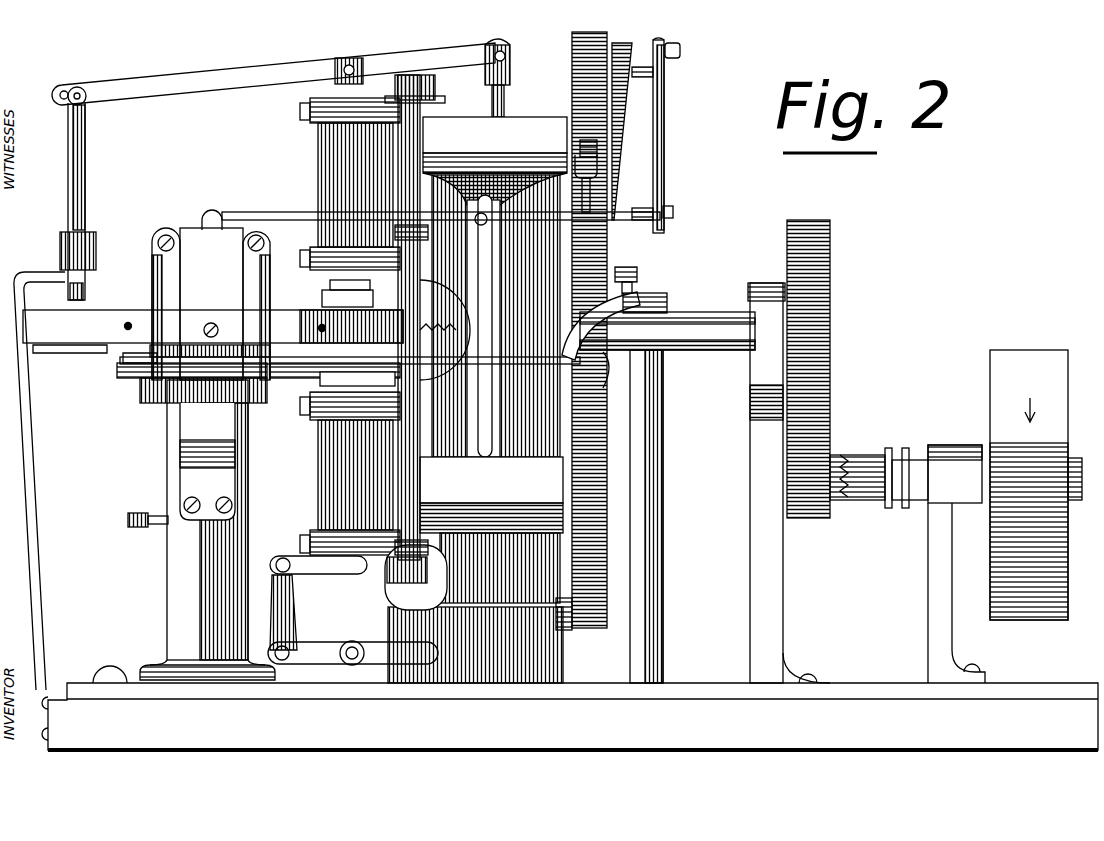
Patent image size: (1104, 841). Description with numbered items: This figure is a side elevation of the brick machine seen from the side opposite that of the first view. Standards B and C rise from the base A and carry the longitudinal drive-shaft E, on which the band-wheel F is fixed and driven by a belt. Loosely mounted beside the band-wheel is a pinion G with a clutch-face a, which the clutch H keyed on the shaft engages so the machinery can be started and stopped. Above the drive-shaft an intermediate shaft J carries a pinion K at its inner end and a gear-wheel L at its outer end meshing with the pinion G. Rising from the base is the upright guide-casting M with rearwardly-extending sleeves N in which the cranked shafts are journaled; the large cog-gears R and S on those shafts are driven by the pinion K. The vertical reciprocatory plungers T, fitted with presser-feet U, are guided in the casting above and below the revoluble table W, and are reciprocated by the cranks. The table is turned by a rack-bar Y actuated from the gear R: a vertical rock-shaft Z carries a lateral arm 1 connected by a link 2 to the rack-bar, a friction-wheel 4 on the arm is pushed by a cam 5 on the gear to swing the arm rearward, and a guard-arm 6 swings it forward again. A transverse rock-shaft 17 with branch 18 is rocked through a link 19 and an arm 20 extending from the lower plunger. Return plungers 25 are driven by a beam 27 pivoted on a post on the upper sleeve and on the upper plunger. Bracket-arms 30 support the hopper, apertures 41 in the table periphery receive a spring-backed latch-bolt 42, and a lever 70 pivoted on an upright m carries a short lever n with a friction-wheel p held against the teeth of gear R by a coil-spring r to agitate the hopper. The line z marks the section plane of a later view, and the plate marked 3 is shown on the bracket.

The base A is at (570, 708).
The standard B is at (926, 580).
The standard C is at (757, 445).
The drive-shaft E is at (922, 460).
The band-wheel F is at (1044, 485).
The pinion G is at (806, 537).
The clutch H is at (888, 456).
The intermediate shaft J is at (720, 312).
The pinion K is at (615, 374).
The gear-wheel L is at (832, 258).
The upright guide-casting M is at (474, 429).
The rearwardly-extending sleeves N is at (493, 325).
The cog-gear R is at (572, 55).
The cog-gear S is at (575, 630).
The vertical reciprocatory plungers T is at (330, 284).
The presser-feet U is at (322, 298).
The revoluble table W is at (213, 336).
The rack-bar Y is at (140, 365).
The vertical rock-shaft Z is at (650, 402).
The clutch-face a is at (845, 455).
The upright m is at (322, 168).
The short lever n is at (592, 195).
The friction-wheel p is at (588, 140).
The coil-spring r is at (536, 205).
The section line z is at (520, 365).
The lateral arm 1 is at (652, 292).
The link 2 is at (522, 355).
The plate 3 is at (222, 250).
The friction-wheel 4 is at (627, 270).
The curvilinear inclined plane or cam 5 is at (622, 45).
The curvilinear guard-arm 6 is at (664, 152).
The transverse rock-shaft 17 is at (353, 645).
The forwardly-extending branch 18 is at (325, 658).
The link 19 is at (293, 610).
The arm 20 is at (297, 558).
The vertically-reciprocating plungers 25 is at (88, 193).
The beam 27 is at (281, 76).
The bracket-arms 30 is at (162, 258).
The apertures 41 is at (225, 327).
The latch-bolt 42 is at (432, 317).
The lever 70 is at (272, 212).